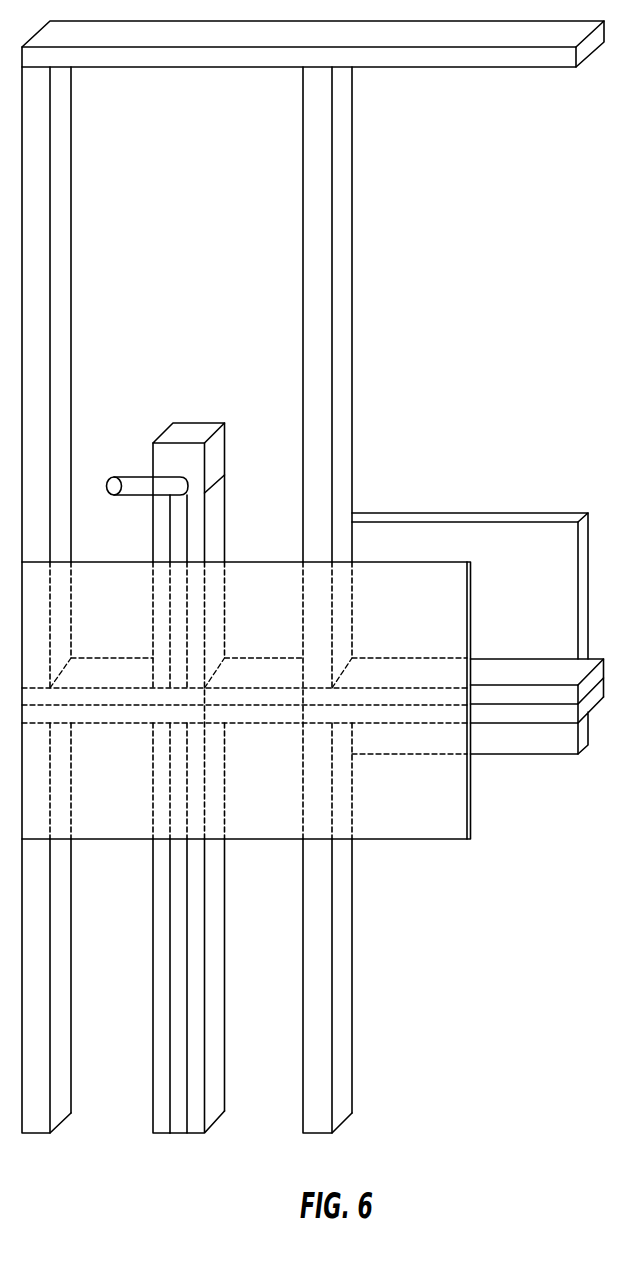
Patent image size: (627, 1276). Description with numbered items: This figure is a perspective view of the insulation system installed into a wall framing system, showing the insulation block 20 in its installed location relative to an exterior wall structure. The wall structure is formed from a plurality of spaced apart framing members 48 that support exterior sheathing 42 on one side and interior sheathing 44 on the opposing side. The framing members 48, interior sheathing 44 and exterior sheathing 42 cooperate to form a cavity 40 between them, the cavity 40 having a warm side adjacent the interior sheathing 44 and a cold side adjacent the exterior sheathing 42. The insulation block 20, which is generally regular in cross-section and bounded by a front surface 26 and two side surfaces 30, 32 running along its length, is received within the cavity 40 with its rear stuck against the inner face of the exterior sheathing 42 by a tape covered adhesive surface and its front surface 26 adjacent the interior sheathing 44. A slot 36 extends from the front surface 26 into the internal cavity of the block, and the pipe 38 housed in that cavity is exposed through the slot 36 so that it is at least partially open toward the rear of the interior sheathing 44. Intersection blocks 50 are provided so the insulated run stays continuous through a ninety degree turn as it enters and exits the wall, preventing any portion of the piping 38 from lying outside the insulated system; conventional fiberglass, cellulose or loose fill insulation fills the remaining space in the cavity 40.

The insulation block 20 is at (188, 756).
The front surface 26 is at (188, 778).
The side surface 30 is at (153, 1066).
The side surface 32 is at (210, 1092).
The slot 36 is at (178, 982).
The pipe 38 is at (136, 477).
The cavity 40 is at (246, 706).
The exterior sheathing 42 is at (415, 512).
The interior sheathing 44 is at (435, 839).
The framing members 48 is at (37, 1127).
The intersection block 50 is at (195, 428).